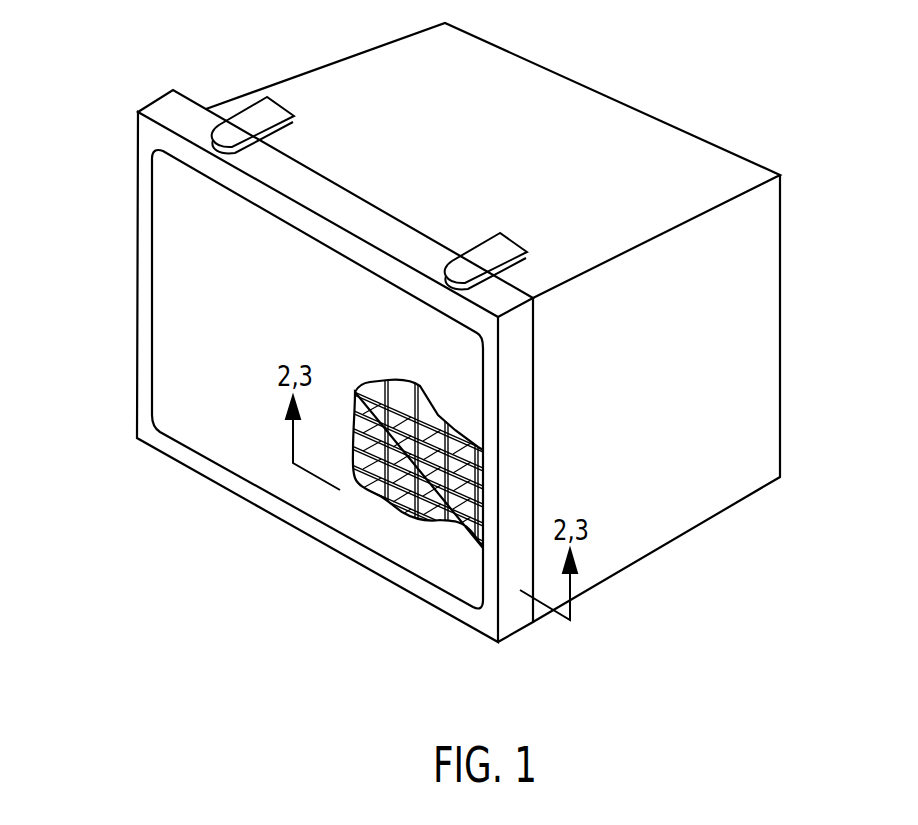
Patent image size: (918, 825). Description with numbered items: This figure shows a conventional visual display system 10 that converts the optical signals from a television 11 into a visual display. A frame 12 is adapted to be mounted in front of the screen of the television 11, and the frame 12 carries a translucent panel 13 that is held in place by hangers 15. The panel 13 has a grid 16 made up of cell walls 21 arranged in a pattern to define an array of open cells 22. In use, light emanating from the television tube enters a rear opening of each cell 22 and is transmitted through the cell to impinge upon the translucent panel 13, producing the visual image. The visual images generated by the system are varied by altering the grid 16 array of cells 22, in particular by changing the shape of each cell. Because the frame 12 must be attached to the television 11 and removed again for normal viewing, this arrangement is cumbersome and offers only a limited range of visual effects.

The device 10 is at (140, 38).
The television 11 is at (733, 318).
The frame 12 is at (513, 384).
The translucent panel 13 is at (228, 263).
The hangers 15 is at (497, 240).
The grid 16 is at (468, 461).
The cell walls 21 is at (445, 423).
The open cells 22 is at (393, 379).